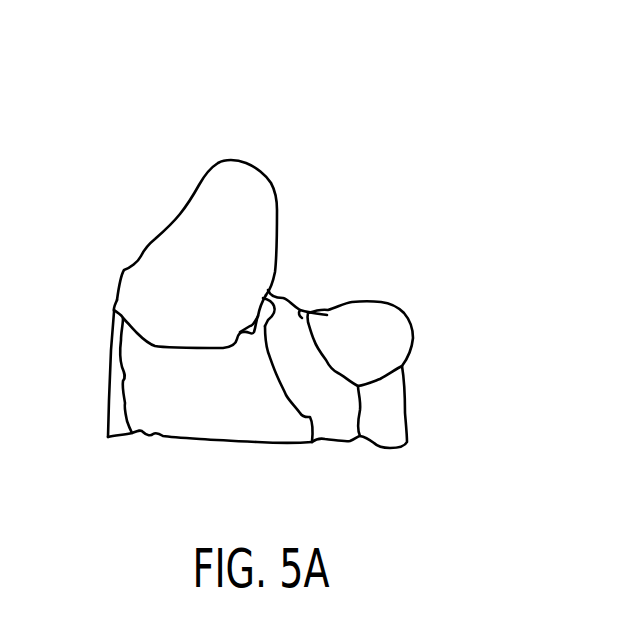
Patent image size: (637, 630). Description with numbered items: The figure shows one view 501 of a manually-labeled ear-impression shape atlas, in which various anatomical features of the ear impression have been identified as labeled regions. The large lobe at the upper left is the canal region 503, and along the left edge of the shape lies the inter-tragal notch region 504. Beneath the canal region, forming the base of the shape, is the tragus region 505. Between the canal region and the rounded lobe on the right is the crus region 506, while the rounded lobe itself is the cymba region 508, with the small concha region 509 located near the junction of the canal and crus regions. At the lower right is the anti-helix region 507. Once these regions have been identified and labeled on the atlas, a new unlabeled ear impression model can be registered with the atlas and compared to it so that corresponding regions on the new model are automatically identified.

The view of ear-impression shape atlas 501 is at (248, 97).
The canal region 503 is at (208, 212).
The inter-tragal notch region 504 is at (115, 412).
The tragus region 505 is at (243, 432).
The crus region 506 is at (302, 308).
The anti-helix region 507 is at (400, 418).
The cymba region 508 is at (400, 333).
The concha region 509 is at (268, 294).